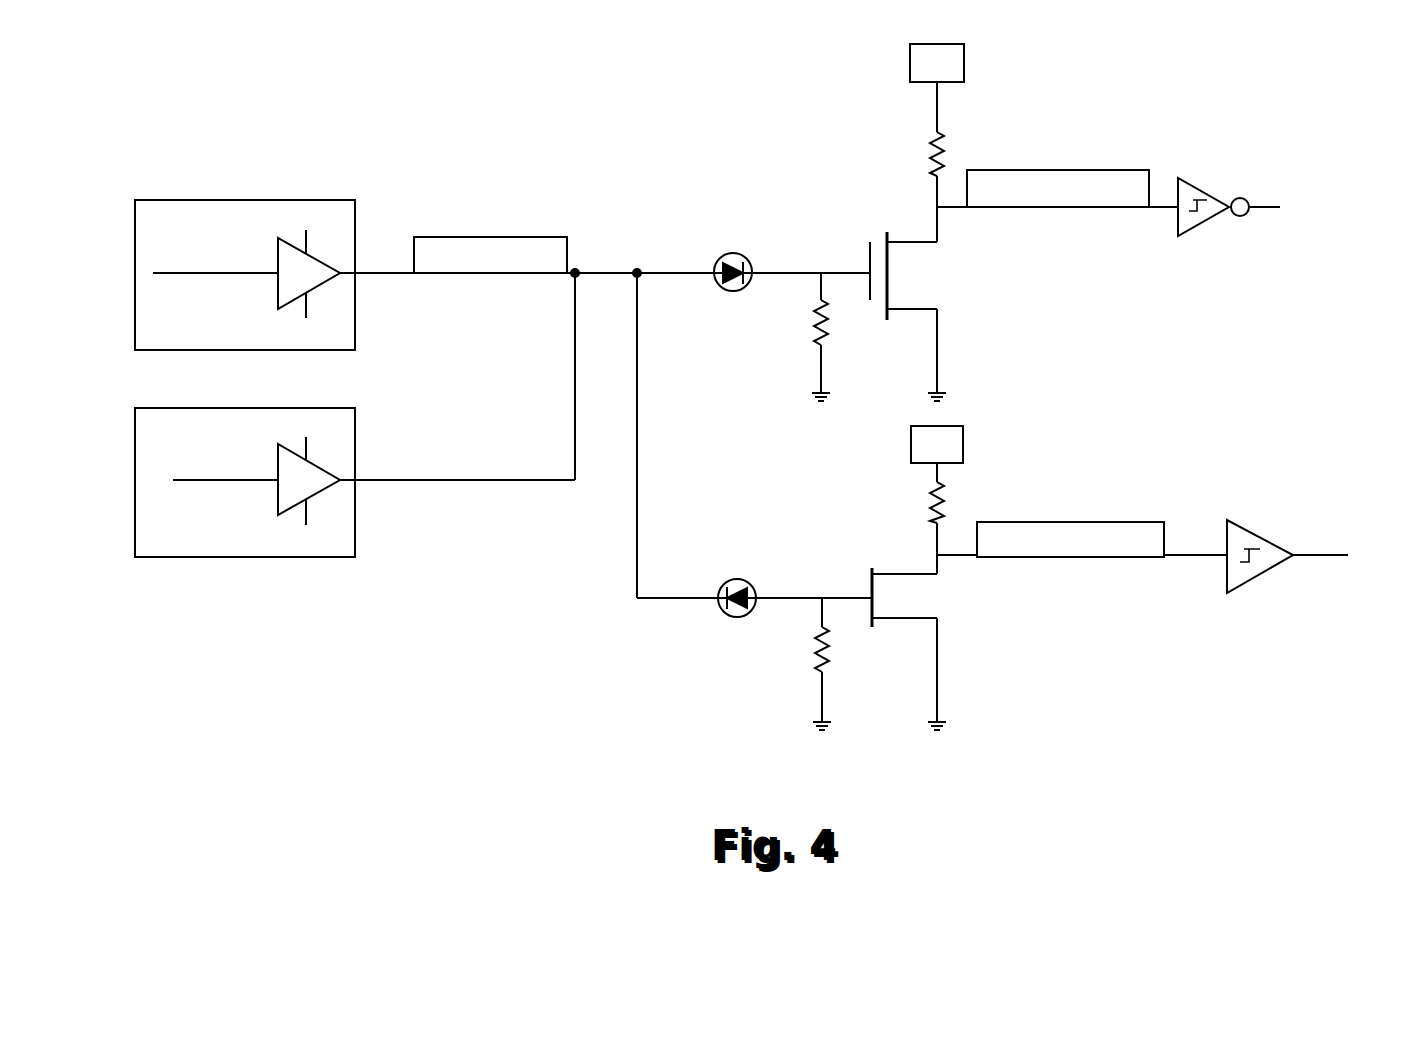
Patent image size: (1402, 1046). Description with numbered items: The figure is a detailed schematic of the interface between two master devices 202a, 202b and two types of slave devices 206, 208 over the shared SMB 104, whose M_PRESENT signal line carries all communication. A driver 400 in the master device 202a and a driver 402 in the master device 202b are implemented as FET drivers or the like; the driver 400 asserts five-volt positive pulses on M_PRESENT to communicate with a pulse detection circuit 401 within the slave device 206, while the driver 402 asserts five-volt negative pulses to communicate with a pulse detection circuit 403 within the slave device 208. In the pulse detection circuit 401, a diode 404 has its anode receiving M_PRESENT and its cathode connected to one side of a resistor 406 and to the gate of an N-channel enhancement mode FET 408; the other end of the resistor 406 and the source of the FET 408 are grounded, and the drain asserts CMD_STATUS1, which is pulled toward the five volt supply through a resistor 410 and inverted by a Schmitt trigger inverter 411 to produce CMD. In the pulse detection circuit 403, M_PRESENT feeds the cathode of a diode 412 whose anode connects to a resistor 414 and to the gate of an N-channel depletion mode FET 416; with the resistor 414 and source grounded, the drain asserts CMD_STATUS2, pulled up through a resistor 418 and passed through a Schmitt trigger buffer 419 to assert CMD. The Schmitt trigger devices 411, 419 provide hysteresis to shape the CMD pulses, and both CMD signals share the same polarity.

The master device 202a is at (210, 259).
The master device 202b is at (210, 466).
The driver 400 is at (277, 285).
The driver 402 is at (277, 493).
The SMB 104 is at (600, 272).
The pulse detection circuit 401 is at (945, 222).
The pulse detection circuit 403 is at (947, 578).
The diode 404 is at (752, 264).
The diode 412 is at (737, 579).
The resistor 406 is at (817, 317).
The resistor 414 is at (820, 647).
The N-channel enhancement mode field-effect transistor 408 is at (885, 248).
The N-channel depletion mode FET 416 is at (870, 585).
The resistor 410 is at (932, 150).
The resistor 418 is at (932, 502).
The slave device 206 is at (1256, 165).
The slave device 208 is at (1301, 512).
The Schmitt trigger inverter 411 is at (1196, 225).
The Schmitt trigger buffer 419 is at (1256, 578).